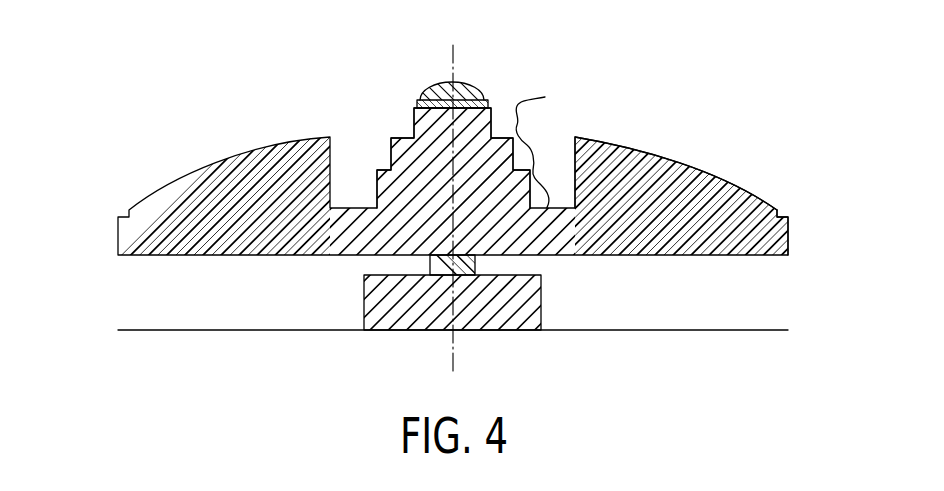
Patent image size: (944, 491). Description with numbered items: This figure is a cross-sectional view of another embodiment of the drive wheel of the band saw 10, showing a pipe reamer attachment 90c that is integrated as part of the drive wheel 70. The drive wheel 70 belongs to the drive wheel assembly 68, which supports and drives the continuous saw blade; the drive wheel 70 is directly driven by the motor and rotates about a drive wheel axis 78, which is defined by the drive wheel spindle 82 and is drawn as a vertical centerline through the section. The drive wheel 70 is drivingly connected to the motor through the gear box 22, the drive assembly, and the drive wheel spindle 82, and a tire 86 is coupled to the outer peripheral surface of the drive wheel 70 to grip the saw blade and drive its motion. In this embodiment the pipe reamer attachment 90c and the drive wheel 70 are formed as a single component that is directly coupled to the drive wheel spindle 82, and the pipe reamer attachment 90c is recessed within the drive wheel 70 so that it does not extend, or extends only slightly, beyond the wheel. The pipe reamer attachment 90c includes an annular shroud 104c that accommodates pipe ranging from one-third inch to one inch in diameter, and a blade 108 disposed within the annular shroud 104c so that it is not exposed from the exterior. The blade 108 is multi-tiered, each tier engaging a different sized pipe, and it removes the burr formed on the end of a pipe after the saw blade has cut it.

The drive wheel assembly 68 is at (135, 107).
The drive wheel 70 is at (703, 190).
The pipe reamer attachment 90c is at (358, 106).
The blade 108 is at (545, 97).
The annular shroud 104c is at (566, 143).
The tire 86 is at (788, 236).
The drive wheel spindle 82 is at (475, 268).
The gear box 22 is at (520, 303).
The band saw 10 is at (750, 330).
The drive wheel axis 78 is at (453, 362).